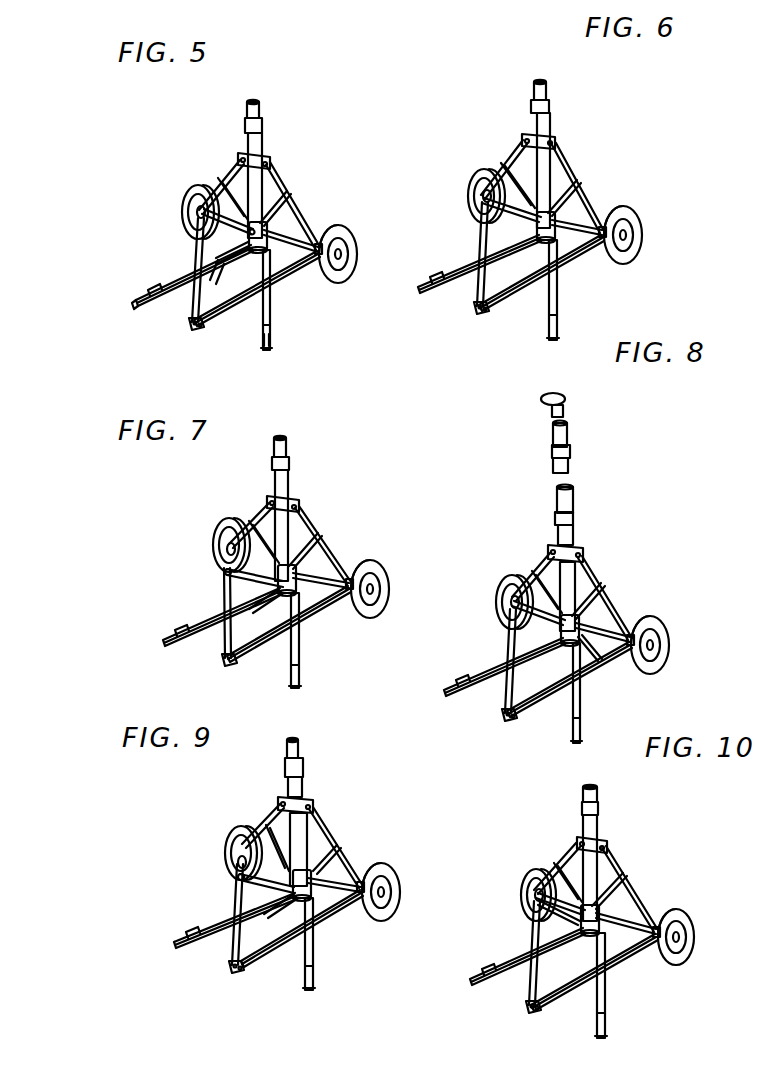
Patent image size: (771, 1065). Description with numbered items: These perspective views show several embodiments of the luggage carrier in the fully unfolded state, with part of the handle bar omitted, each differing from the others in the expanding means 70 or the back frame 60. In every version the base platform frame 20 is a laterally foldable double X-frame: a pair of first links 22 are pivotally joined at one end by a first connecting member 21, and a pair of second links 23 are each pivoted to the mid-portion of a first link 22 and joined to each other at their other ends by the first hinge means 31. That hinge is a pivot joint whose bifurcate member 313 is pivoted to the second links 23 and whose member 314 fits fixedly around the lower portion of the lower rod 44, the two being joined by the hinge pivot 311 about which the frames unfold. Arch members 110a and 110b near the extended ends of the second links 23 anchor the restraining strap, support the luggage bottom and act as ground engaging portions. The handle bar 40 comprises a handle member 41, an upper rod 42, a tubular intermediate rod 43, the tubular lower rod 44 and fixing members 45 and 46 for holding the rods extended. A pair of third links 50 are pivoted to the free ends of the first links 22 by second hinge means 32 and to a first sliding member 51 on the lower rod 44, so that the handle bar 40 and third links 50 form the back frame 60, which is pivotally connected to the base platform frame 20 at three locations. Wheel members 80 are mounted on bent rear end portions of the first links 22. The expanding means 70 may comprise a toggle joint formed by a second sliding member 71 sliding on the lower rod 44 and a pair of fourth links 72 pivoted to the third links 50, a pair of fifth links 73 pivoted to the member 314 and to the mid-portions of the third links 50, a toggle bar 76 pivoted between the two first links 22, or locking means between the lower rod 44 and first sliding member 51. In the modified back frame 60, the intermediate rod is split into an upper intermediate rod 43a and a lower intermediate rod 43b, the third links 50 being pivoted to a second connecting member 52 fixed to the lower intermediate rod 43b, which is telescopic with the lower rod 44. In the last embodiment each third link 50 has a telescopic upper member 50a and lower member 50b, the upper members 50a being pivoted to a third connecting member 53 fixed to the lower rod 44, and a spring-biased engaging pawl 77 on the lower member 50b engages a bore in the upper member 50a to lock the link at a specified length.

In FIG. 5, the base platform frame 20 is at (229, 293).
In FIG. 6, the base platform frame 20 is at (529, 274).
In FIG. 7, the base platform frame 20 is at (262, 630).
In FIG. 8, the base platform frame 20 is at (548, 669).
In FIG. 9, the base platform frame 20 is at (274, 934).
In FIG. 10, the base platform frame 20 is at (579, 964).
In FIG. 5, the first connecting member 21 is at (189, 293).
In FIG. 6, the first connecting member 21 is at (466, 274).
In FIG. 5, the first links 22 is at (194, 270).
In FIG. 6, the first links 22 is at (478, 277).
In FIG. 7, the first links 22 is at (219, 630).
In FIG. 5, the second links 23 is at (255, 316).
In FIG. 6, the second links 23 is at (537, 300).
In FIG. 7, the second links 23 is at (276, 641).
In FIG. 6, the first hinge means 31 is at (565, 271).
In FIG. 7, the first hinge means 31 is at (223, 584).
In FIG. 8, the first hinge means 31 is at (552, 696).
In FIG. 9, the first hinge means 31 is at (231, 887).
In FIG. 10, the first hinge means 31 is at (580, 990).
In FIG. 5, the second hinge means 32 is at (269, 288).
In FIG. 6, the second hinge means 32 is at (561, 273).
In FIG. 7, the second hinge means 32 is at (297, 624).
In FIG. 8, the second hinge means 32 is at (580, 679).
In FIG. 9, the second hinge means 32 is at (307, 932).
In FIG. 10, the second hinge means 32 is at (609, 973).
In FIG. 8, the handle bar 40 is at (588, 465).
In FIG. 10, the handle bar 40 is at (613, 868).
In FIG. 8, the handle member 41 is at (575, 403).
In FIG. 8, the upper rod 42 is at (582, 433).
In FIG. 5, the intermediate rod 43 is at (272, 106).
In FIG. 6, the intermediate rod 43 is at (557, 92).
In FIG. 7, the intermediate rod 43 is at (298, 452).
In FIG. 10, the intermediate rod 43 is at (610, 790).
In FIG. 8, the upper intermediate rod 43a is at (590, 499).
In FIG. 9, the upper intermediate rod 43a is at (315, 746).
In FIG. 8, the lower intermediate rod 43b is at (588, 526).
In FIG. 9, the lower intermediate rod 43b is at (319, 782).
In FIG. 5, the lower rod 44 is at (279, 185).
In FIG. 6, the lower rod 44 is at (516, 168).
In FIG. 7, the lower rod 44 is at (255, 520).
In FIG. 8, the lower rod 44 is at (510, 605).
In FIG. 9, the lower rod 44 is at (329, 848).
In FIG. 10, the lower rod 44 is at (526, 898).
In FIG. 8, the fixing member 45 is at (537, 453).
In FIG. 5, the fixing member 46 is at (233, 126).
In FIG. 8, the fixing member 46 is at (541, 511).
In FIG. 9, the fixing member 46 is at (270, 775).
In FIG. 10, the fixing member 46 is at (612, 810).
In FIG. 5, the third links 50 is at (296, 206).
In FIG. 6, the third links 50 is at (476, 193).
In FIG. 7, the third links 50 is at (210, 545).
In FIG. 8, the third links 50 is at (609, 595).
In FIG. 9, the third links 50 is at (351, 847).
In FIG. 10, the third links 50 is at (532, 870).
In FIG. 10, the upper member 50a is at (556, 858).
In FIG. 10, the lower member 50b is at (531, 892).
In FIG. 5, the first sliding member 51 is at (228, 154).
In FIG. 6, the first sliding member 51 is at (486, 167).
In FIG. 7, the first sliding member 51 is at (302, 488).
In FIG. 8, the second connecting member 52 is at (589, 545).
In FIG. 9, the second connecting member 52 is at (319, 799).
In FIG. 10, the third connecting member 53 is at (624, 848).
In FIG. 5, the back frame 60 is at (299, 222).
In FIG. 6, the back frame 60 is at (580, 186).
In FIG. 7, the back frame 60 is at (237, 526).
In FIG. 8, the back frame 60 is at (533, 569).
In FIG. 9, the back frame 60 is at (247, 835).
In FIG. 10, the back frame 60 is at (638, 889).
In FIG. 5, the expanding means 70 is at (256, 223).
In FIG. 6, the expanding means 70 is at (573, 161).
In FIG. 7, the expanding means 70 is at (360, 572).
In FIG. 8, the expanding means 70 is at (504, 581).
In FIG. 9, the expanding means 70 is at (222, 853).
In FIG. 5, the second sliding member 71 is at (208, 195).
In FIG. 8, the second sliding member 71 is at (580, 597).
In FIG. 10, the second sliding member 71 is at (527, 925).
In FIG. 5, the fourth links 72 is at (337, 240).
In FIG. 8, the fourth links 72 is at (650, 631).
In FIG. 10, the fourth links 72 is at (655, 972).
In FIG. 6, the fifth links 73 is at (582, 246).
In FIG. 7, the fifth links 73 is at (321, 539).
In FIG. 8, the fifth links 73 is at (599, 684).
In FIG. 9, the fifth links 73 is at (365, 859).
In FIG. 7, the toggle bar 76 is at (290, 627).
In FIG. 9, the toggle bar 76 is at (304, 938).
In FIG. 10, the engaging pawl 77 is at (650, 903).
In FIG. 5, the wheel members 80 is at (180, 209).
In FIG. 5, the arch member 110a is at (138, 283).
In FIG. 5, the arch member 110b is at (296, 352).
In FIG. 5, the hinge pivot 311 is at (291, 282).
In FIG. 5, the bifurcate member 313 is at (194, 236).
In FIG. 5, the member 314 is at (223, 310).